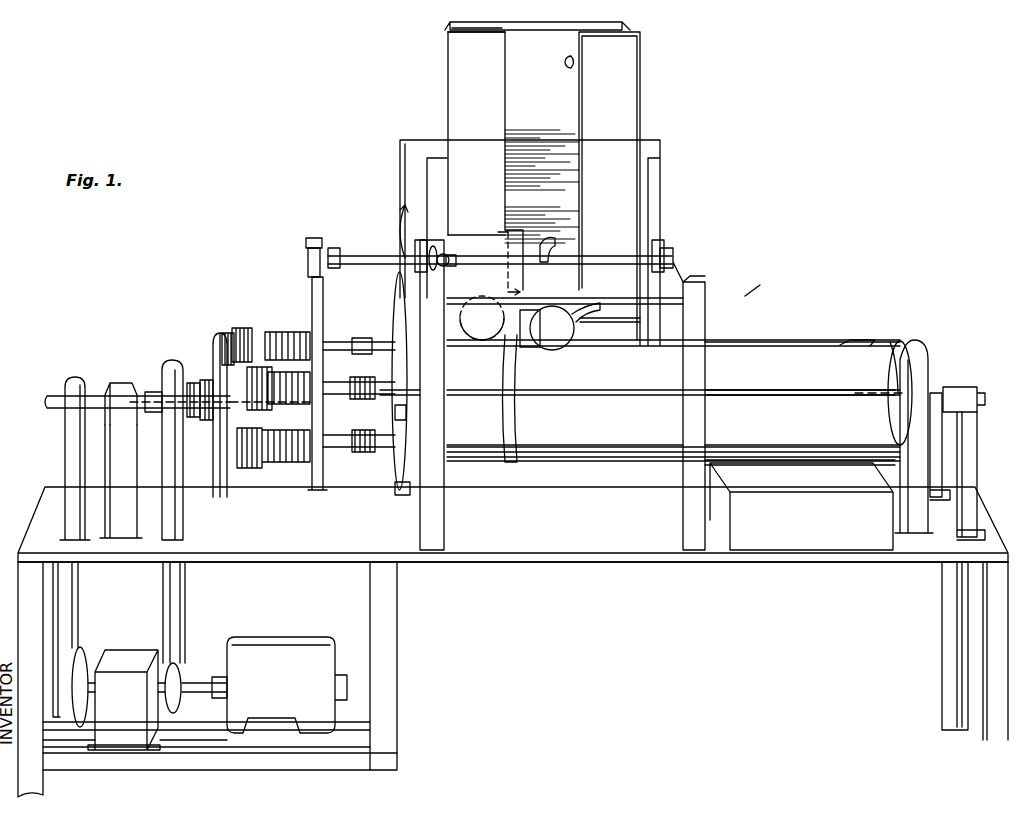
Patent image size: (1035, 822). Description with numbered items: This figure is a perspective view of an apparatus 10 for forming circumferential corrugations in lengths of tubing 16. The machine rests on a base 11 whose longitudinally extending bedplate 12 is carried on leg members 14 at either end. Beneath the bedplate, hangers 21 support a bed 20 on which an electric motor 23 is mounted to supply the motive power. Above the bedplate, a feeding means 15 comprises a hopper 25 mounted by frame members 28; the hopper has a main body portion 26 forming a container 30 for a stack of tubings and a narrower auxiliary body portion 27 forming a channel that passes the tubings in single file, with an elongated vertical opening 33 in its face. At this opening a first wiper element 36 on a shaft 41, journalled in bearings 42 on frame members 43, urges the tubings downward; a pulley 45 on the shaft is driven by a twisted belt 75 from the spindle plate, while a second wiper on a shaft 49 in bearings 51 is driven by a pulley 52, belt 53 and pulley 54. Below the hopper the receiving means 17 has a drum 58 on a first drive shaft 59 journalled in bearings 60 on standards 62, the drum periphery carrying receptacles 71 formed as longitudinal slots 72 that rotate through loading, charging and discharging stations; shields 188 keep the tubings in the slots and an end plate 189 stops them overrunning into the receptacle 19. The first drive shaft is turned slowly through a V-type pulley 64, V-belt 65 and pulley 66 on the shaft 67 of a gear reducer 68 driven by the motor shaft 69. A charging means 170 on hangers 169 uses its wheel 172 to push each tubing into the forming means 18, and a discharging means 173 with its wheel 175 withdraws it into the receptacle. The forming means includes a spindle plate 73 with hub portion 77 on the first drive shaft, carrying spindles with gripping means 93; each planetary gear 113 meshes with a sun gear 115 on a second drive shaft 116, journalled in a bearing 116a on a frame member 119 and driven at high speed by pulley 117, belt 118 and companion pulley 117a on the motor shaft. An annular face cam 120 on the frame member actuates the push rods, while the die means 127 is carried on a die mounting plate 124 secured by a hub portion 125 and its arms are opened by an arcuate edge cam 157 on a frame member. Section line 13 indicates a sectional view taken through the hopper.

The apparatus 10 is at (766, 283).
The base 11 is at (678, 562).
The bedplate 12 is at (582, 560).
The section line 13 is at (513, 263).
The leg members 14 is at (43, 770).
The feeding means 15 is at (655, 100).
The tubing 16 is at (575, 140).
The receiving means 17 is at (599, 467).
The forming means 18 is at (292, 324).
The receptacle 19 is at (812, 553).
The bed 20 is at (310, 770).
The hangers 21 is at (397, 695).
The electric motor 23 is at (287, 685).
The hopper 25 is at (440, 68).
The main body portion 26 is at (448, 32).
The auxiliary body portion 27 is at (476, 104).
The frame members 28 is at (425, 145).
The container 30 is at (628, 30).
The elongated vertical opening 33 is at (577, 62).
The first wiper element 36 is at (549, 232).
The shaft 41 is at (602, 258).
The bearings 42 is at (335, 248).
The frame members 43 is at (376, 262).
The pulley 45 is at (314, 238).
The shaft 49 is at (425, 250).
The bearings 51 is at (415, 250).
The pulley 52 is at (436, 250).
The belt 53 is at (446, 255).
The pulley 54 is at (456, 258).
The drum 58 is at (795, 345).
The first drive shaft 59 is at (152, 392).
The bearings 60 is at (118, 388).
The standards 62 is at (105, 440).
The V-type pulley 64 is at (80, 378).
The V-belt 65 is at (70, 395).
The pulley 66 is at (80, 648).
The shaft 67 is at (88, 688).
The gear reducer 68 is at (124, 700).
The shaft 69 is at (205, 684).
The receptacles 71 is at (753, 396).
The slots 72 is at (806, 396).
The spindle plate 73 is at (313, 490).
The belt 75 is at (308, 258).
The hub portion 77 is at (275, 462).
The gripping means 93 is at (359, 476).
The planetary gear 113 is at (248, 328).
The sun gear 115 is at (268, 468).
The second drive shaft 116 is at (188, 383).
The bearing 116a is at (203, 383).
The pulley 117 is at (175, 367).
The companion pulley 117a is at (180, 672).
The belt 118 is at (185, 600).
The frame member 119 is at (215, 495).
The annular face cam 120 is at (234, 325).
The die mounting plate 124 is at (397, 492).
The hub portion 125 is at (362, 400).
The die means 127 is at (387, 309).
The arcuate edge cam 157 is at (392, 286).
The hangers 169 is at (628, 300).
The charging means 170 is at (572, 347).
The wheel 172 is at (528, 347).
The discharging means 173 is at (465, 298).
The wheel 175 is at (480, 341).
The shields 188 is at (512, 462).
The end plate 189 is at (920, 345).